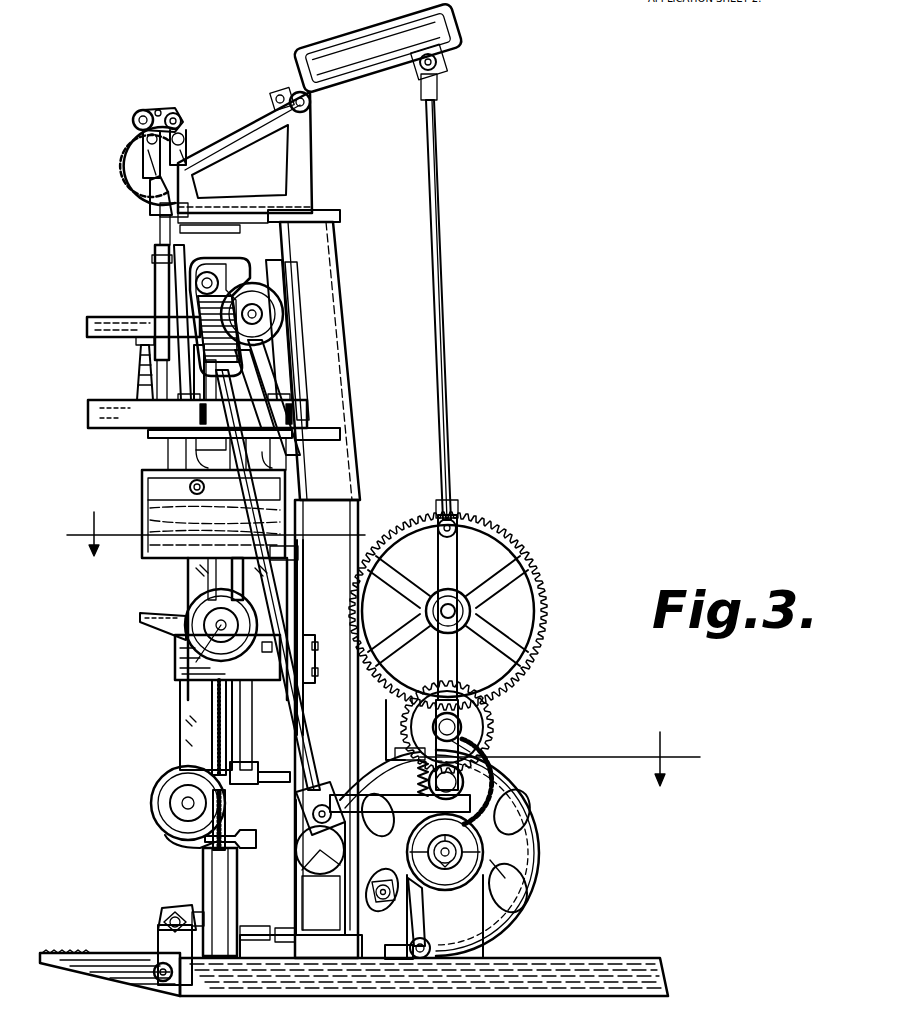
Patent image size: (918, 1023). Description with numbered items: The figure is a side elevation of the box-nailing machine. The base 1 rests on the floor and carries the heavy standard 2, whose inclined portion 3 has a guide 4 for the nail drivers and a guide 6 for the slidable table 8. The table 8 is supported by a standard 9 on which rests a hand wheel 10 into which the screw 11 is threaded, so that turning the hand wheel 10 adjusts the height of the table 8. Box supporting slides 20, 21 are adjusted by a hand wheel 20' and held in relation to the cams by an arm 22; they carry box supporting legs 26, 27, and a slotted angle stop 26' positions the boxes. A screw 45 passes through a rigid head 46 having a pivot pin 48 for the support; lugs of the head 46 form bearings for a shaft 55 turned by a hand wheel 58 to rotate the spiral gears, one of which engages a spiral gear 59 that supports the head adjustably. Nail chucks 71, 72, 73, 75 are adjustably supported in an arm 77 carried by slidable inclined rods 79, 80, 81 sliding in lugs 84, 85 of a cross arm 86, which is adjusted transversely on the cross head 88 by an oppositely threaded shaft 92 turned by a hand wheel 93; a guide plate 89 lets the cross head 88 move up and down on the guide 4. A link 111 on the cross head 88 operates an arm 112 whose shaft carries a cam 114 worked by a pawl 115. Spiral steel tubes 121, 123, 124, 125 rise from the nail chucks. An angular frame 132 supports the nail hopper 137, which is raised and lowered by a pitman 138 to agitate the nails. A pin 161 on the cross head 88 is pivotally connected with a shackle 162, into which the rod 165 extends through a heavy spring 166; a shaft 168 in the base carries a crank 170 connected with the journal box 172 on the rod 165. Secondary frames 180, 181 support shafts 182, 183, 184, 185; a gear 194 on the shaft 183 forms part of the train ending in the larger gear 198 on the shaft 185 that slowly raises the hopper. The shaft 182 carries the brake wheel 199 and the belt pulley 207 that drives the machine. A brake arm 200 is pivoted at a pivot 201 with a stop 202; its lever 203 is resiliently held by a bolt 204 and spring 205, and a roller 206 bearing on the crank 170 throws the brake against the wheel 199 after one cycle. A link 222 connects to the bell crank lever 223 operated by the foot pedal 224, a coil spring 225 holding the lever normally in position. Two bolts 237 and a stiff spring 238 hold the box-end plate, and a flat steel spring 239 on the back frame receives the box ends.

The base 1 is at (604, 960).
The standard 2 is at (360, 510).
The inclined portion 3 is at (335, 264).
The guide 4 is at (340, 434).
The guide 6 is at (303, 584).
The table 8 is at (176, 660).
The standard 9 is at (237, 892).
The hand wheel 10 is at (382, 696).
The screw 11 is at (233, 820).
The box supporting slide 20 is at (178, 625).
The hand wheel 20' is at (270, 657).
The box supporting slide 21 is at (206, 652).
The arm 22 is at (381, 867).
The box supporting leg 26 is at (215, 629).
The slotted angle stop 26' is at (304, 554).
The box supporting leg 27 is at (288, 608).
The screw 45 is at (215, 720).
The head 46 is at (240, 786).
The pivot pin 48 is at (268, 772).
The shaft 55 is at (184, 803).
The hand wheel 58 is at (175, 842).
The spiral gear 59 is at (300, 812).
The nail chuck 71 is at (168, 452).
The nail chuck 72 is at (148, 492).
The nail chuck 73 is at (213, 462).
The nail chuck 75 is at (278, 464).
The arm 77 is at (108, 428).
The inclined rod 79 is at (211, 446).
The inclined rod 80 is at (194, 378).
The inclined rod 81 is at (285, 396).
The lug 84 is at (155, 285).
The lug 85 is at (286, 298).
The cross arm 86 is at (87, 327).
The cross head 88 is at (220, 317).
The guide plate 89 is at (290, 363).
The shaft 92 is at (256, 313).
The hand wheel 93 is at (298, 336).
The link 111 is at (205, 186).
The arm 112 is at (144, 112).
The cam 114 is at (126, 175).
The pawl 115 is at (148, 128).
The spiral steel tube 121 is at (273, 415).
The spiral steel tube 123 is at (217, 415).
The spiral steel tube 124 is at (206, 392).
The spiral steel tube 125 is at (138, 365).
The angular frame 132 is at (300, 172).
The nail hopper 137 is at (378, 48).
The pitman 138 is at (440, 276).
The pin 161 is at (208, 272).
The shackle 162 is at (155, 266).
The rod 165 is at (300, 732).
The spring 166 is at (200, 325).
The shaft 168 is at (318, 867).
The crank 170 is at (332, 878).
The journal box 172 is at (250, 838).
The secondary frame 180 is at (460, 690).
The secondary frame 181 is at (470, 753).
The shaft 182 is at (455, 872).
The shaft 183 is at (462, 790).
The shaft 184 is at (462, 727).
The shaft 185 is at (451, 612).
The gear 194 is at (488, 712).
The gear 198 is at (500, 545).
The wheel 199 is at (480, 880).
The brake arm 200 is at (424, 925).
The pivot 201 is at (428, 955).
The stop 202 is at (398, 958).
The lever 203 is at (380, 780).
The bolt 204 is at (395, 745).
The spring 205 is at (418, 760).
The roller 206 is at (340, 795).
The belt pulley 207 is at (548, 852).
The link 222 is at (267, 922).
The bell crank lever 223 is at (160, 920).
The pedal 224 is at (60, 955).
The coil spring 225 is at (188, 975).
The bolt 237 is at (204, 488).
The stiff spring 238 is at (215, 525).
The flat steel spring 239 is at (156, 505).